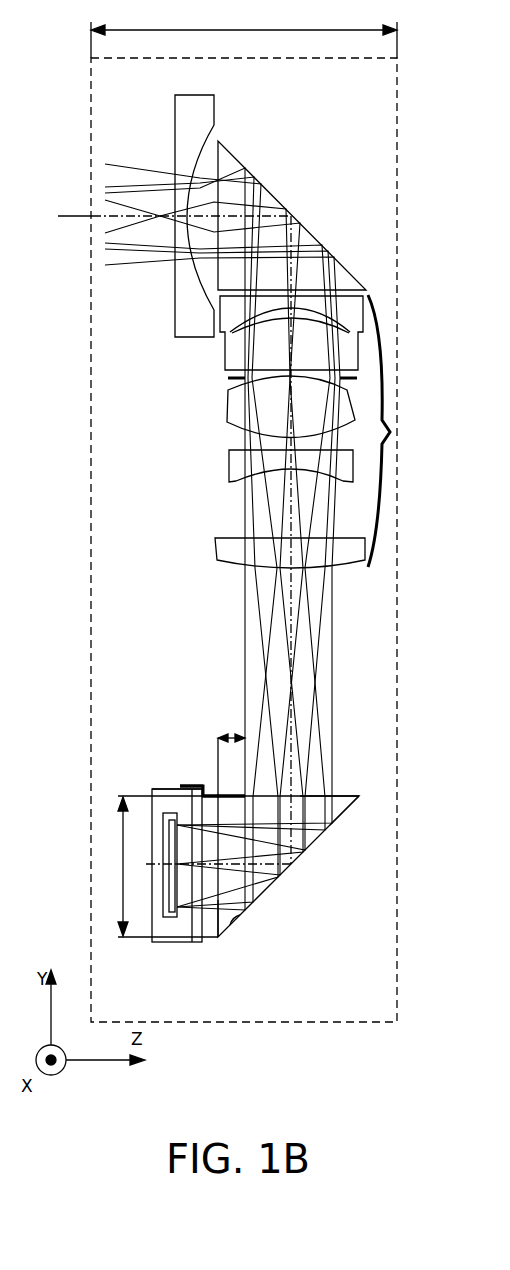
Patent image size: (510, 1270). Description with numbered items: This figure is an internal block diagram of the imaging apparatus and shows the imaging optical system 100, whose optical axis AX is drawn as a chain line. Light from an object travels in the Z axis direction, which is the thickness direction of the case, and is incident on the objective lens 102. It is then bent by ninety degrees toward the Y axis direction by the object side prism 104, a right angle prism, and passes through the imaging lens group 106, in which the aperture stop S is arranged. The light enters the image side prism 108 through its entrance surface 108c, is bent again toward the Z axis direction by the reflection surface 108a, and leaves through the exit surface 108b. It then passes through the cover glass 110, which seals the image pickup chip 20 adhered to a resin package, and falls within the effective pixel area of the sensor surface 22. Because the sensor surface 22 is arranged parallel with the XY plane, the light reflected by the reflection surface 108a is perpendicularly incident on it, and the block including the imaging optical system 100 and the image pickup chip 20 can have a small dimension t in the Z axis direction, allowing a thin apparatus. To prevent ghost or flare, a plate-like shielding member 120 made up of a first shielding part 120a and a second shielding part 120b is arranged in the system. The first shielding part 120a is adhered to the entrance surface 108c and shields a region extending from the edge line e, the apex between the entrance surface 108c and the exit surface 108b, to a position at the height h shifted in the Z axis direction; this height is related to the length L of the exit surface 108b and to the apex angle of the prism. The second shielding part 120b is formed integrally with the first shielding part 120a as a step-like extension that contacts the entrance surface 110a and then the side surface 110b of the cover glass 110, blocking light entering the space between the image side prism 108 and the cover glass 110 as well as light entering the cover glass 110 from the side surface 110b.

The imaging optical system 100 is at (180, 468).
The objective lens 102 is at (178, 117).
The object side prism 104 is at (342, 273).
The imaging lens group 106 is at (384, 375).
The image side prism 108 is at (302, 845).
The reflection surface 108a is at (372, 775).
The exit surface 108b is at (223, 930).
The entrance surface 108c is at (336, 795).
The cover glass 110 is at (198, 940).
The entrance surface 110a is at (203, 910).
The side surface 110b is at (190, 792).
The shielding member 120 is at (190, 762).
The first shielding part 120a is at (235, 793).
The second shielding part 120b is at (187, 785).
The image pickup chip 20 is at (163, 916).
The sensor surface 22 is at (176, 895).
The aperture stop S is at (233, 380).
The optical axis AX is at (291, 610).
The edge line e is at (218, 795).
The height h is at (231, 757).
The length of the exit surface L is at (160, 867).
The dimension of the block t is at (244, 33).